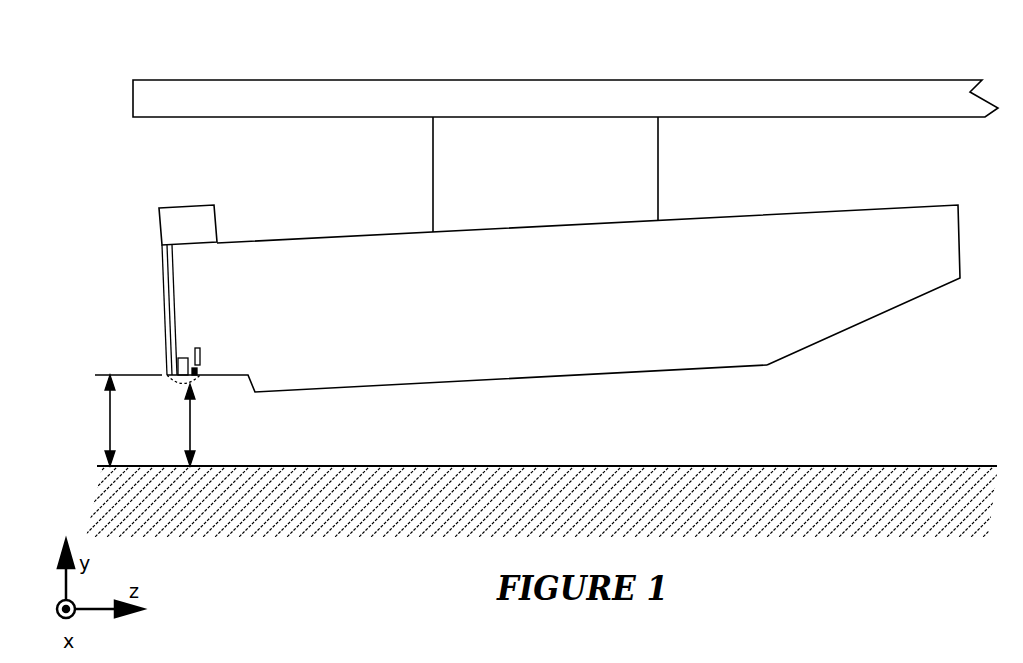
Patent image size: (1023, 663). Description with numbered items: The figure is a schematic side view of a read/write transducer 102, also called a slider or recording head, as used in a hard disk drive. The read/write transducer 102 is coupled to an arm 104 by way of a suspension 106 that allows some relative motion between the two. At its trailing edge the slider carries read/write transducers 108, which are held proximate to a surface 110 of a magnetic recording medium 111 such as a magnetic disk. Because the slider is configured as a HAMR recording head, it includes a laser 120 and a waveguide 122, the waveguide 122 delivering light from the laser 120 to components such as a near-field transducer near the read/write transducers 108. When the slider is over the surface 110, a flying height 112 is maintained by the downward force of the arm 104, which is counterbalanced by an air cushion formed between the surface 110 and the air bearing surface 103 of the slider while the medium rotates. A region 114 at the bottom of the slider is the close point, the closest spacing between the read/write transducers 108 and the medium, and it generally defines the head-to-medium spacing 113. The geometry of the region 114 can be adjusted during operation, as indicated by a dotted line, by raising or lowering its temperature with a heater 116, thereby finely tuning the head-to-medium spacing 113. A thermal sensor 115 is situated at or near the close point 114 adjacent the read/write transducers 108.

The read/write transducer 102 is at (825, 220).
The air bearing surface 103 is at (378, 386).
The arm 104 is at (890, 90).
The suspension 106 is at (657, 163).
The read/write transducers 108 is at (178, 358).
The surface 110 is at (830, 465).
The magnetic recording medium 111 is at (847, 520).
The flying height 112 is at (111, 420).
The head-to-medium spacing 113 is at (167, 425).
The close point region 114 is at (198, 385).
The thermal sensor 115 is at (197, 372).
The heater 116 is at (200, 350).
The laser 120 is at (186, 214).
The waveguide 122 is at (170, 283).